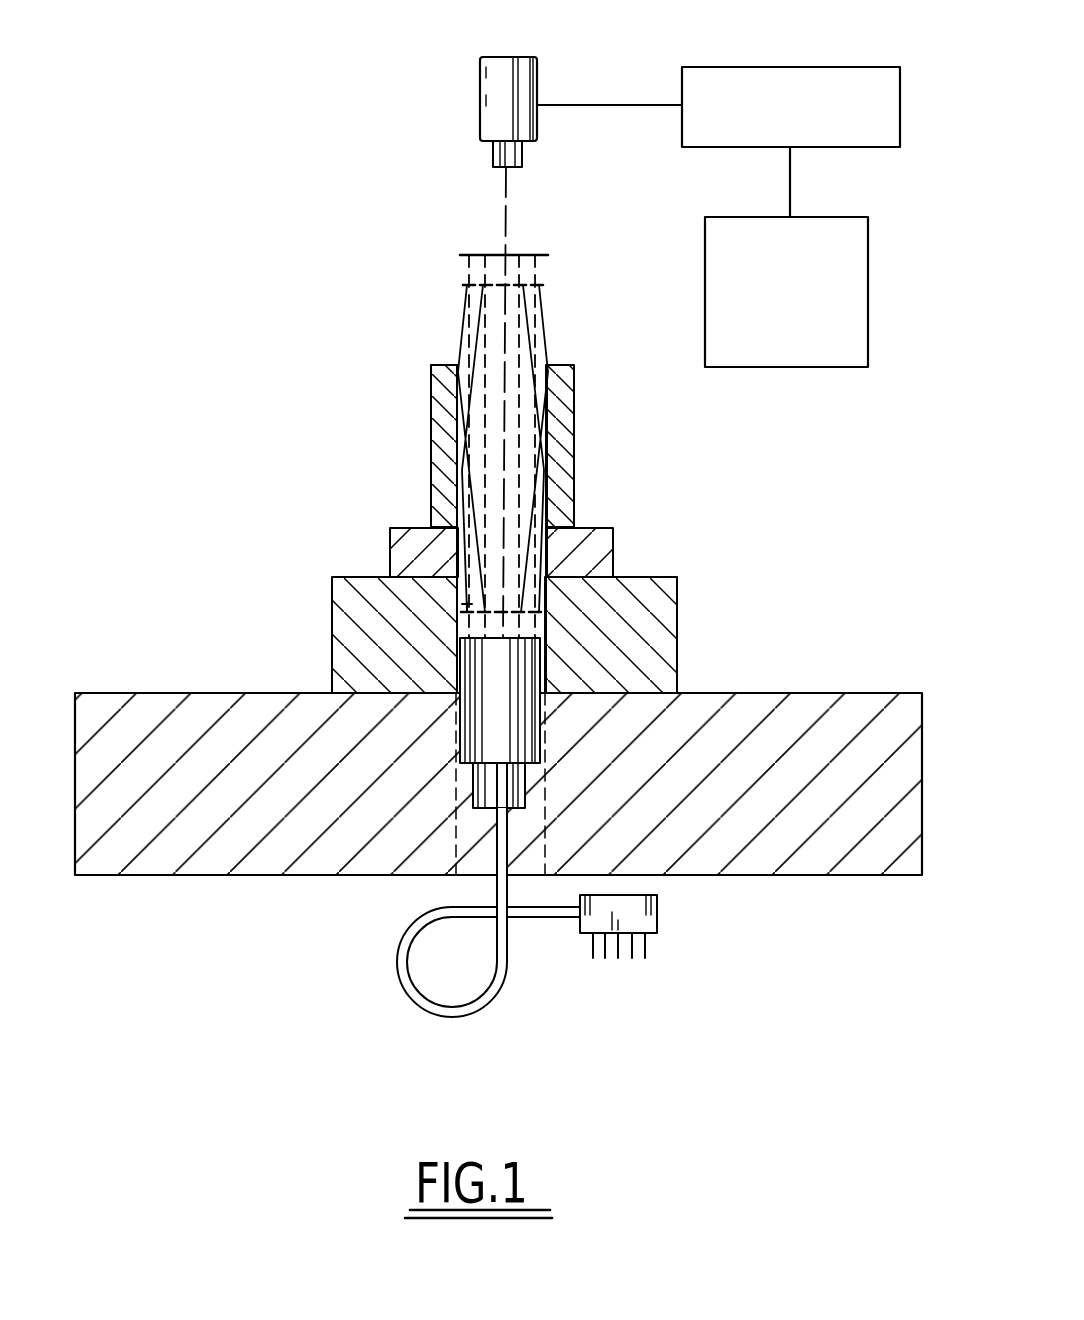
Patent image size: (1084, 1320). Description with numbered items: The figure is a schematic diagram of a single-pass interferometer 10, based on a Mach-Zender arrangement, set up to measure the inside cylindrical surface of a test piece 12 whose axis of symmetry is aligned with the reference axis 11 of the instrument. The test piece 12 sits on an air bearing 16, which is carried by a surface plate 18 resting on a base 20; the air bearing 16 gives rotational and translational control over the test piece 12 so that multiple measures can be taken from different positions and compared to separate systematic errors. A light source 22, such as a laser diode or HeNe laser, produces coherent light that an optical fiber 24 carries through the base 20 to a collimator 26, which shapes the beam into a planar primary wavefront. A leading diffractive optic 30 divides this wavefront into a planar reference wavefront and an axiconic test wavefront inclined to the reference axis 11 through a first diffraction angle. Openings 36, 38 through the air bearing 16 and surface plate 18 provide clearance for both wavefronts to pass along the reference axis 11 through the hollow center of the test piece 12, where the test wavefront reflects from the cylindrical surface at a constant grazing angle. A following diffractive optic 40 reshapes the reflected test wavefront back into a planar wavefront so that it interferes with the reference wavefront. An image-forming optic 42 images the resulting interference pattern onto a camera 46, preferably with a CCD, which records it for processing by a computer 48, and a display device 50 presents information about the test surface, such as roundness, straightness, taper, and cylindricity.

The single-pass interferometer 10 is at (208, 314).
The reference axis 11 is at (506, 198).
The test piece 12 is at (575, 436).
The air bearing 16 is at (412, 527).
The surface plate 18 is at (332, 628).
The base 20 is at (205, 700).
The light source 22 is at (643, 920).
The optical fiber 24 is at (400, 956).
The collimator 26 is at (500, 712).
The leading diffractive optic 30 is at (540, 608).
The opening through the air bearing 36 is at (543, 530).
The opening through the surface plate 38 is at (468, 608).
The following diffractive optic 40 is at (535, 287).
The image-forming optic 42 is at (462, 255).
The camera 46 is at (480, 73).
The computer 48 is at (722, 67).
The display device 50 is at (868, 265).